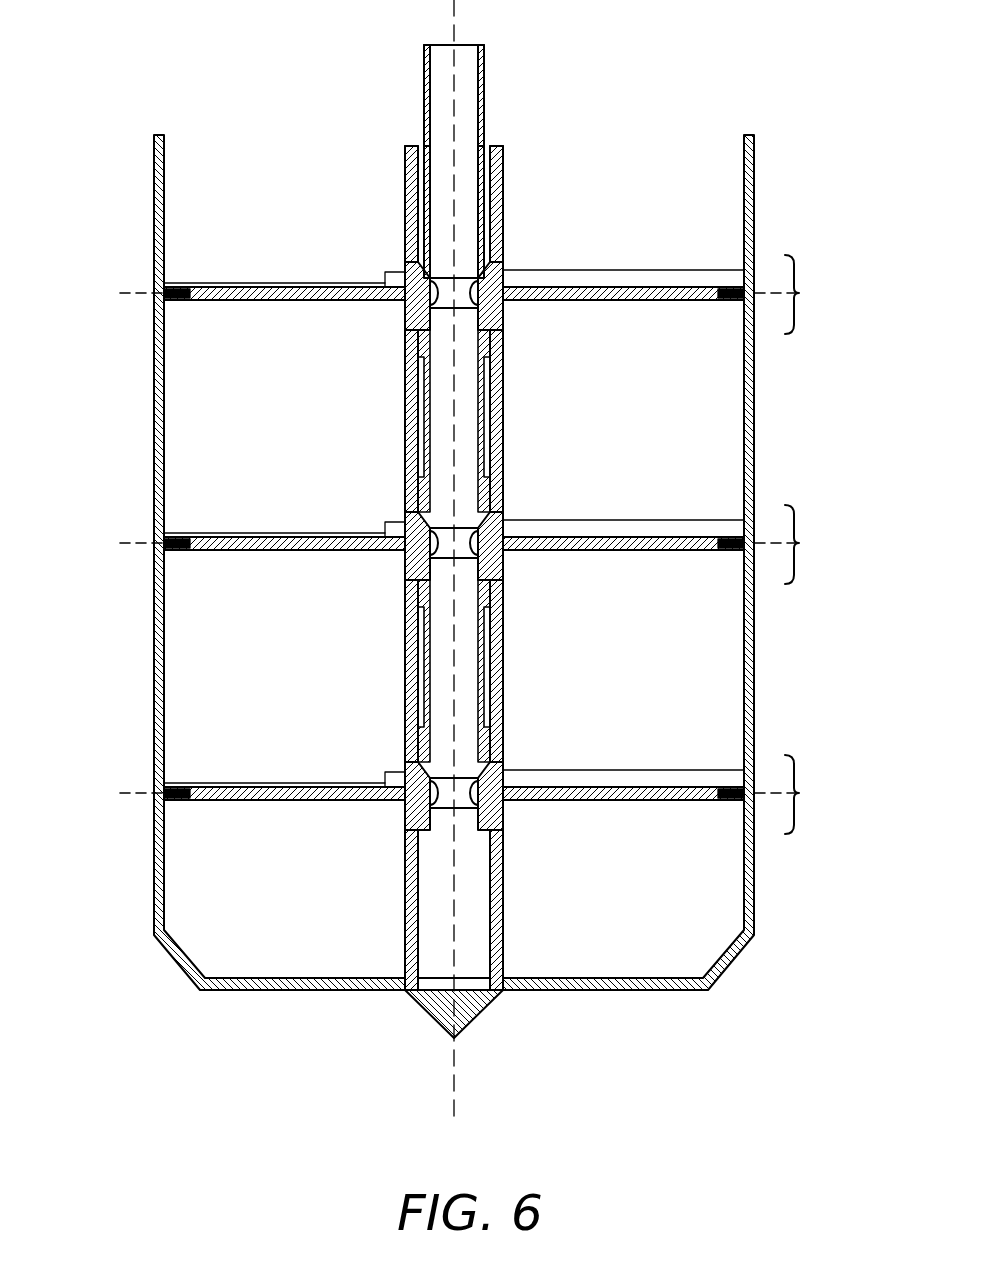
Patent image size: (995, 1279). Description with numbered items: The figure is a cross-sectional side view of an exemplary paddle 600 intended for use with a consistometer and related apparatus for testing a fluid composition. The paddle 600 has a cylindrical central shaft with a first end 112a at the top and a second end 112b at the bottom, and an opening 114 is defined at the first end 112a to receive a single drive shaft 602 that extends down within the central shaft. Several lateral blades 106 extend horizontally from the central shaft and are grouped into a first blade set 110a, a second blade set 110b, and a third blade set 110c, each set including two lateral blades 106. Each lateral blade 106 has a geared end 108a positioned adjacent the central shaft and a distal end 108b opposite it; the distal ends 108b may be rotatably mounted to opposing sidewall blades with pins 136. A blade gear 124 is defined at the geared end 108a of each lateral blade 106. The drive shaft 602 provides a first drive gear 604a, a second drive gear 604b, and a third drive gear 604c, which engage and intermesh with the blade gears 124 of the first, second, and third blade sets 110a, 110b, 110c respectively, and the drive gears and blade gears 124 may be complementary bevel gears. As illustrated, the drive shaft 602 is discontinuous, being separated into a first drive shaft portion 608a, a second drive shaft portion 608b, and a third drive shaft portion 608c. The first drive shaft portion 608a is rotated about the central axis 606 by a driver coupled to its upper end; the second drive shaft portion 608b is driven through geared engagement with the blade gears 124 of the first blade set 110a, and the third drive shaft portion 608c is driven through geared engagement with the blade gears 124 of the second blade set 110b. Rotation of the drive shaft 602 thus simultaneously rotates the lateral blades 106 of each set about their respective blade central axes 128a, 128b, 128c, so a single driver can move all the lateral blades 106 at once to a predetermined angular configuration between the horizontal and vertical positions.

The paddle 600 is at (224, 80).
The drive shaft 602 is at (420, 96).
The first drive shaft portion 608a is at (424, 134).
The second drive shaft portion 608b is at (422, 420).
The third drive shaft portion 608c is at (422, 670).
The opening 114 is at (494, 140).
The first end 112a is at (398, 181).
The second end 112b is at (398, 959).
The central axis 606 is at (455, 880).
The first drive gear 604a is at (500, 240).
The second drive gear 604b is at (500, 490).
The third drive gear 604c is at (500, 740).
The lateral blade 106 is at (290, 284).
The blade gear 124 is at (396, 270).
The pin 136 is at (180, 286).
The geared end 108a is at (400, 308).
The distal end 108b is at (178, 308).
The blade central axis 128a is at (130, 293).
The blade central axis 128b is at (130, 543).
The blade central axis 128c is at (130, 793).
The first blade set 110a is at (805, 294).
The second blade set 110b is at (805, 544).
The third blade set 110c is at (805, 794).